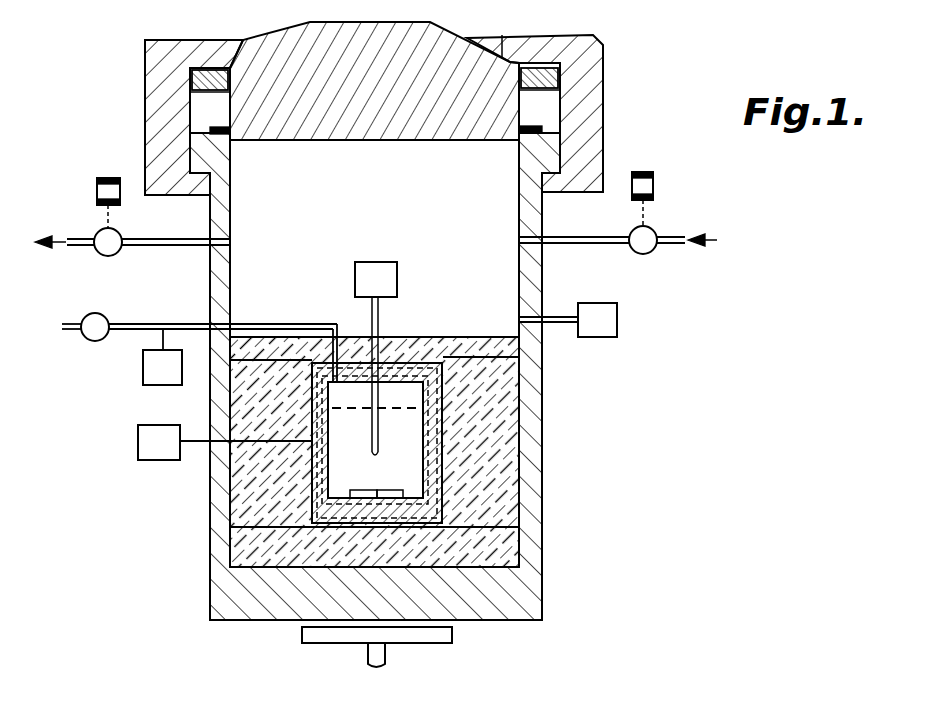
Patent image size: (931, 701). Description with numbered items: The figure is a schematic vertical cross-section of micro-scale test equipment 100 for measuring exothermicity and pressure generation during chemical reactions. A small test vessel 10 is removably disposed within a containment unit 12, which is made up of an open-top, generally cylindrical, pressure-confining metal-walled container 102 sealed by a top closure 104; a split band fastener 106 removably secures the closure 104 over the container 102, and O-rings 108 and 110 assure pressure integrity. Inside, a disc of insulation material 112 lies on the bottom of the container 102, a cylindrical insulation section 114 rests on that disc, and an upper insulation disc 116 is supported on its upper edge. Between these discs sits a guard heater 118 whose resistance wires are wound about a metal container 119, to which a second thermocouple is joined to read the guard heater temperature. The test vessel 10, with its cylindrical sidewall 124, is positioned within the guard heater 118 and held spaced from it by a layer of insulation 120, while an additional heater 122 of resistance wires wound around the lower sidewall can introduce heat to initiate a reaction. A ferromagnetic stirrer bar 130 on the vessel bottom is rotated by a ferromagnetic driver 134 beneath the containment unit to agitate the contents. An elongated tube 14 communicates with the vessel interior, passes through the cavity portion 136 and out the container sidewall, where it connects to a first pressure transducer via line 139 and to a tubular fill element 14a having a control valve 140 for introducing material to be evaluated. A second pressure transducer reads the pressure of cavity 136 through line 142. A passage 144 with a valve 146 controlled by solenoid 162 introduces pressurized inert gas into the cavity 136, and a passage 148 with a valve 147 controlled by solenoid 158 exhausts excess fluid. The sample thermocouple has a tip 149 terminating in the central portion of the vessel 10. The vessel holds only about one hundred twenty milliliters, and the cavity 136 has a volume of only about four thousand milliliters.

The test vessel 10 is at (405, 357).
The containment unit 12 is at (552, 378).
The elongated tube 14 is at (278, 325).
The tubular fill element 14a is at (129, 325).
The apparatus 100 is at (632, 40).
The metal-walled container 102 is at (540, 503).
The top closure 104 is at (274, 55).
The split band fastener 106 is at (604, 92).
The O-ring 108 is at (540, 72).
The O-ring 110 is at (230, 126).
The disc of insulation material 112 is at (498, 562).
The cylindrical insulation section 114 is at (496, 416).
The upper insulation disc 116 is at (472, 342).
The guard heater 118 is at (300, 486).
The metal container 119 is at (312, 449).
The layer of insulation 120 is at (445, 432).
The additional heater 122 is at (442, 466).
The cylindrical sidewall 124 is at (312, 400).
The stirrer bar 130 is at (353, 510).
The ferromagnetic driver 134 is at (340, 644).
The cavity portion 136 is at (374, 238).
The line 139 is at (151, 338).
The control valve 140 is at (88, 315).
The line 142 is at (558, 316).
The passage 144 is at (574, 240).
The valve 146 is at (659, 232).
The valve 147 is at (95, 233).
The passage 148 is at (142, 240).
The thermocouple tip 149 is at (380, 452).
The solenoid 158 is at (104, 176).
The solenoid 162 is at (645, 172).